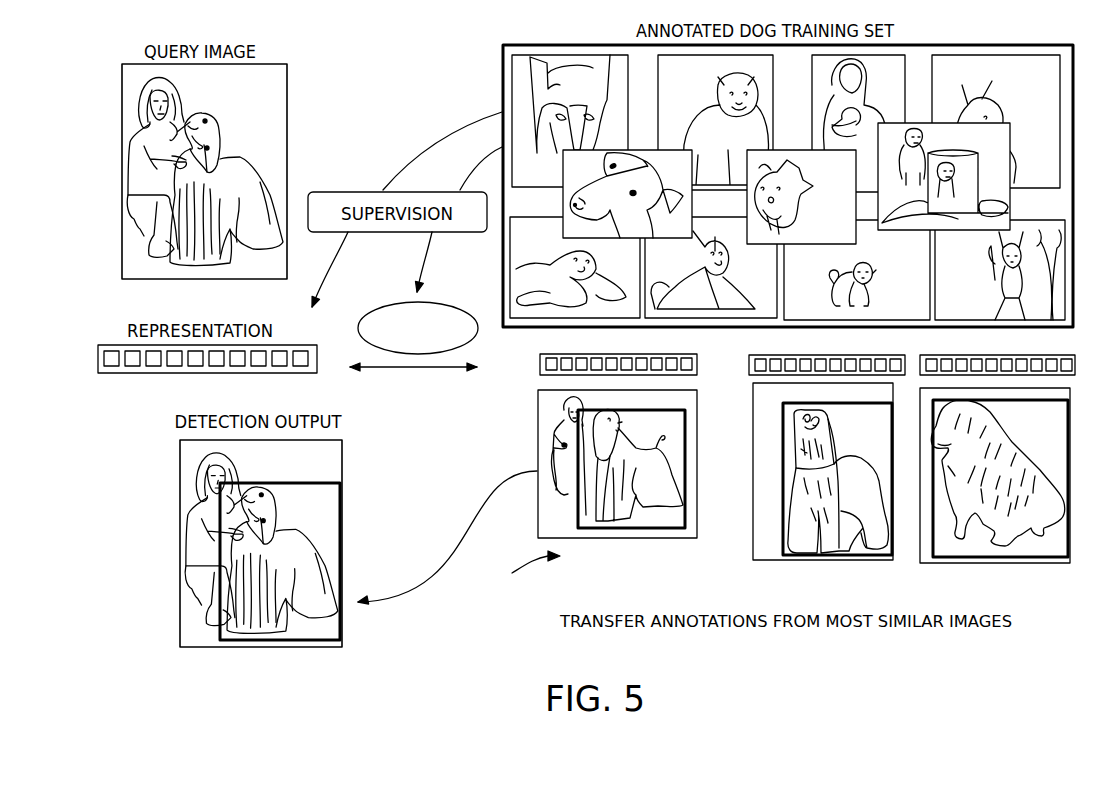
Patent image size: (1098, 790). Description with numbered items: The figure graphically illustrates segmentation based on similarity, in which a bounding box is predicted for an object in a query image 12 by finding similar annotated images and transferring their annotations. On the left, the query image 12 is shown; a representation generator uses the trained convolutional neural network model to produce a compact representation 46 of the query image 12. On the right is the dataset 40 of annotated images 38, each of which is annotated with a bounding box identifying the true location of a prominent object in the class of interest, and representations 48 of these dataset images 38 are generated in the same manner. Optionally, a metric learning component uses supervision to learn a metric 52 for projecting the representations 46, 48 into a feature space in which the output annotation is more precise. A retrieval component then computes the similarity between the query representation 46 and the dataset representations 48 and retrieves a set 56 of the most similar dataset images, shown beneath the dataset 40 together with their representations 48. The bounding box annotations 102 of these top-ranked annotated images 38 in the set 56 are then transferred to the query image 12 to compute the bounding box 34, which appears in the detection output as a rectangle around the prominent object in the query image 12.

The query image 12 is at (288, 112).
The bounding box 34 is at (212, 593).
The dataset 40 is at (503, 78).
The metric 52 is at (378, 303).
The compact representation 46 is at (133, 377).
The representations 48 is at (540, 362).
The annotated images 38 is at (538, 433).
The bounding box annotations 102 is at (688, 475).
The set of similar dataset images 56 is at (523, 567).